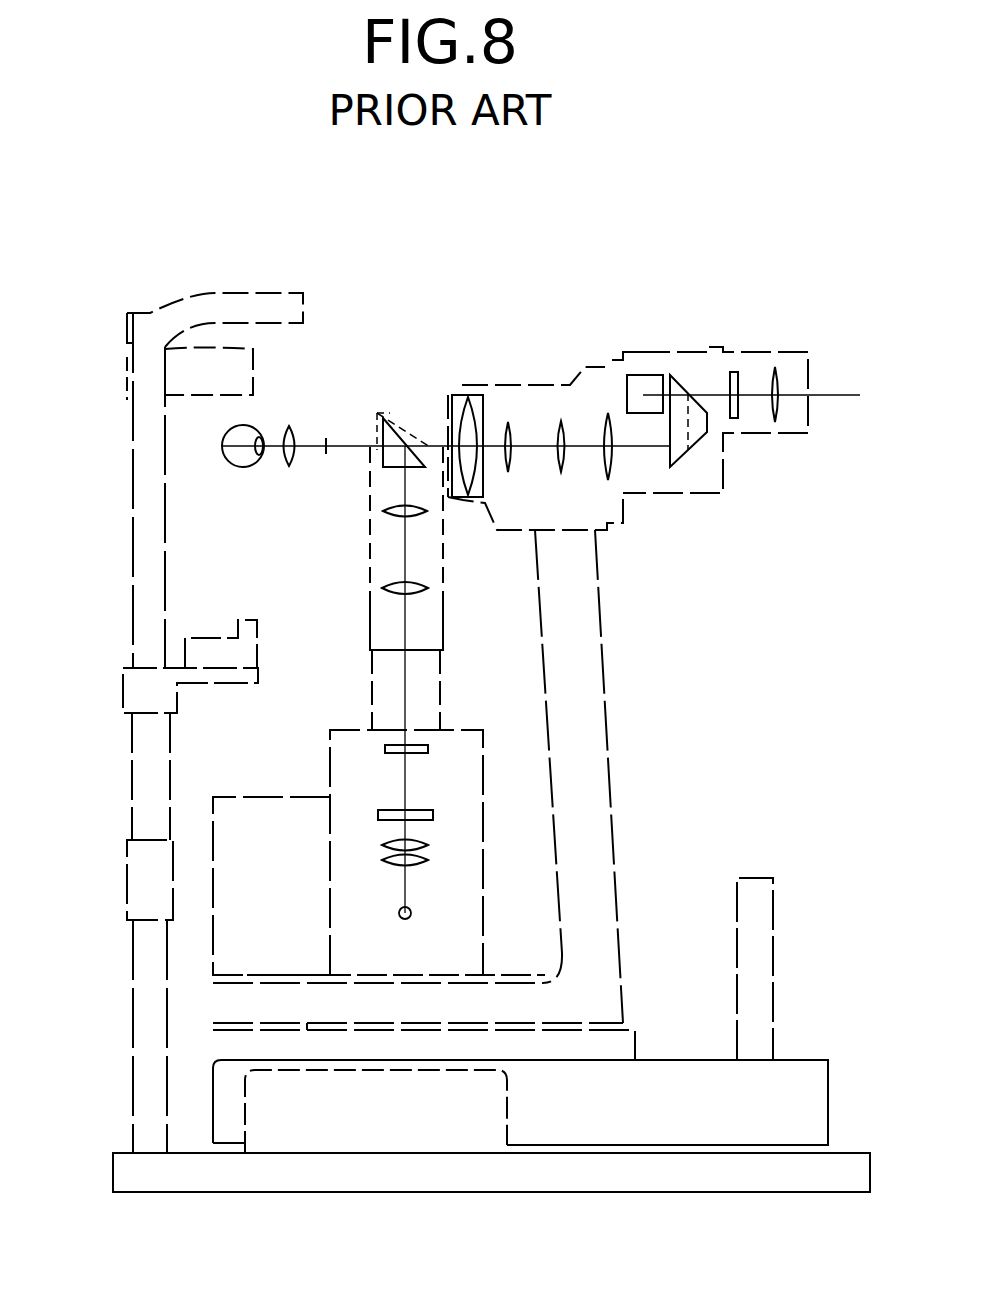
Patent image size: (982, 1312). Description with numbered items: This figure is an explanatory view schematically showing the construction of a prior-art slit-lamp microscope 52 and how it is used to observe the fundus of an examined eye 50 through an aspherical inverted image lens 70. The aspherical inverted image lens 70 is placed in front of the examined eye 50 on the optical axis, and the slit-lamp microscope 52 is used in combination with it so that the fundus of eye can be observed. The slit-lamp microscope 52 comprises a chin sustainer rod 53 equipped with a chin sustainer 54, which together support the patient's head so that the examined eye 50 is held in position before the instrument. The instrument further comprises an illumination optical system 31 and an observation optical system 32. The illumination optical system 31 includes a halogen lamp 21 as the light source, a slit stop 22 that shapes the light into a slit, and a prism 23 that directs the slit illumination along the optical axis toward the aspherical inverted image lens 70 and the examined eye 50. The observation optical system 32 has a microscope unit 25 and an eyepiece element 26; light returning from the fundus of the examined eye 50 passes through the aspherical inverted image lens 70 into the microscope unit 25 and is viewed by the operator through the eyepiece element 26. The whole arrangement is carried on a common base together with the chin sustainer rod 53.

The halogen lamp 21 is at (410, 918).
The slit stop 22 is at (421, 812).
The prism 23 is at (390, 414).
The microscope unit 25 is at (603, 350).
The eyepiece element 26 is at (807, 342).
The illumination optical system 31 is at (458, 683).
The observation optical system 32 is at (582, 500).
The examined eye 50 is at (243, 468).
The slit-lamp microscope 52 is at (609, 325).
The chin sustainer rod 53 is at (115, 541).
The chin sustainer 54 is at (209, 636).
The aspherical inverted image lens 70 is at (291, 468).